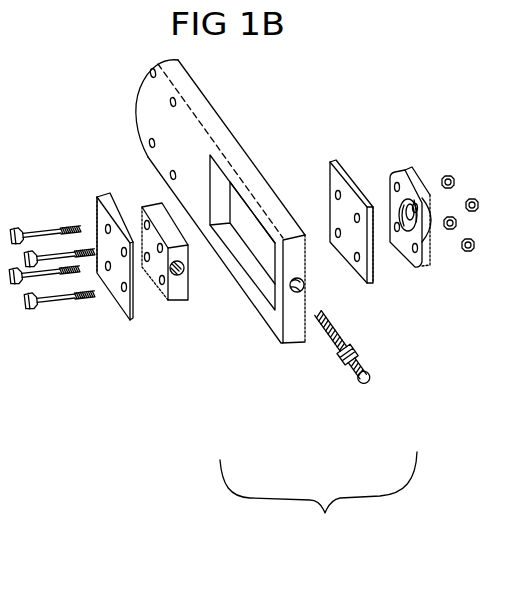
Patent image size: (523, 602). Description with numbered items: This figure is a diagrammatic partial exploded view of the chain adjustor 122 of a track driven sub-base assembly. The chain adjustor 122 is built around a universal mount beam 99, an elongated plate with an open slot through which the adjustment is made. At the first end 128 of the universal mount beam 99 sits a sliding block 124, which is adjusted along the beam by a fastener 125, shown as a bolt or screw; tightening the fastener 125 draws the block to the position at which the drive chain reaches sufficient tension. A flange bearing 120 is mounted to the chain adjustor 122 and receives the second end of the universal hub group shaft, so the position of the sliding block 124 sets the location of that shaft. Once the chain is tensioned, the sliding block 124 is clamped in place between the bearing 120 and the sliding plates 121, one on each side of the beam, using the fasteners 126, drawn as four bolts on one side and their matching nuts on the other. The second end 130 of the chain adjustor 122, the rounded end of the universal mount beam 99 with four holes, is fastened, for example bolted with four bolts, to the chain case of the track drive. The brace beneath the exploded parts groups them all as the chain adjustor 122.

The universal mount beam 99 is at (247, 147).
The flange bearing 120 is at (413, 270).
The sliding plates 121 is at (100, 197).
The chain adjustor 122 is at (318, 509).
The sliding block 124 is at (188, 300).
The fastener 125 is at (358, 387).
The fasteners 126 is at (32, 308).
The first end 128 is at (283, 347).
The second end 130 is at (137, 95).